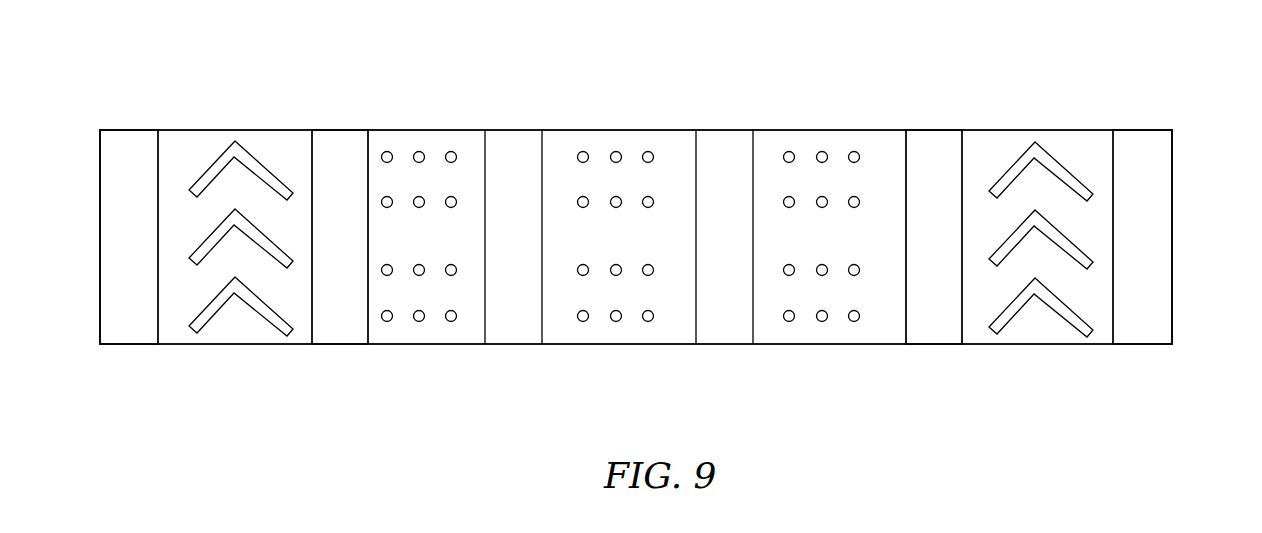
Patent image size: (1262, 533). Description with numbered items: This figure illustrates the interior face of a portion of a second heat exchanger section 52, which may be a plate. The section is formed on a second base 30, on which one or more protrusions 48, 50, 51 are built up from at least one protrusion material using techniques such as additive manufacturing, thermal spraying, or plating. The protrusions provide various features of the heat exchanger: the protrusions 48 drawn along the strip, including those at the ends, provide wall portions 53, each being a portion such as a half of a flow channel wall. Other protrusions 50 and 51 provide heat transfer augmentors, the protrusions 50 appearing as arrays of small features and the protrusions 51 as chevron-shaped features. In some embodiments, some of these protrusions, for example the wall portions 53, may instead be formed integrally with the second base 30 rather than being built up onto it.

The second base 30 is at (1092, 344).
The protrusion 48 is at (130, 130).
The protrusion 50 is at (451, 321).
The protrusion 51 is at (212, 315).
The second heat exchanger section 52 is at (1168, 97).
The wall portion 53 is at (932, 344).